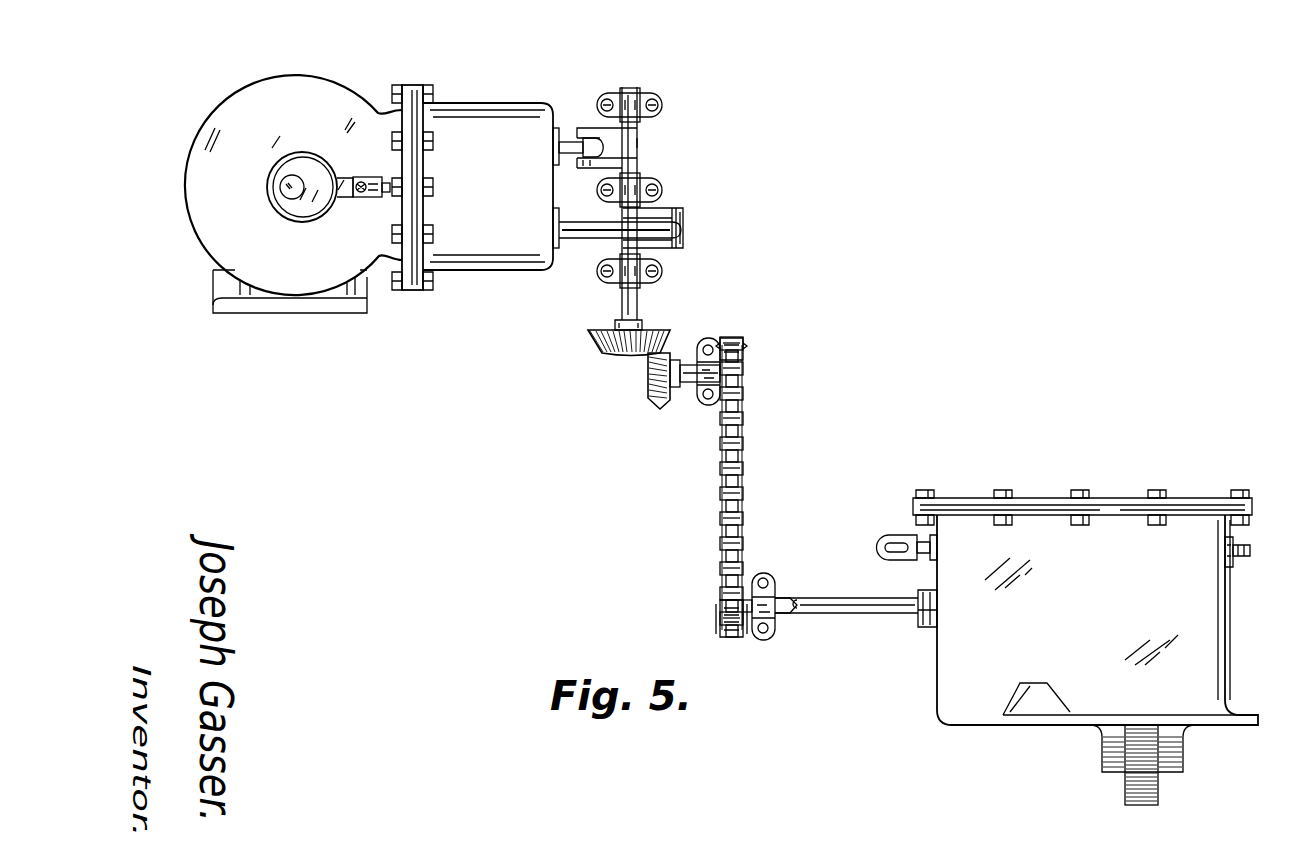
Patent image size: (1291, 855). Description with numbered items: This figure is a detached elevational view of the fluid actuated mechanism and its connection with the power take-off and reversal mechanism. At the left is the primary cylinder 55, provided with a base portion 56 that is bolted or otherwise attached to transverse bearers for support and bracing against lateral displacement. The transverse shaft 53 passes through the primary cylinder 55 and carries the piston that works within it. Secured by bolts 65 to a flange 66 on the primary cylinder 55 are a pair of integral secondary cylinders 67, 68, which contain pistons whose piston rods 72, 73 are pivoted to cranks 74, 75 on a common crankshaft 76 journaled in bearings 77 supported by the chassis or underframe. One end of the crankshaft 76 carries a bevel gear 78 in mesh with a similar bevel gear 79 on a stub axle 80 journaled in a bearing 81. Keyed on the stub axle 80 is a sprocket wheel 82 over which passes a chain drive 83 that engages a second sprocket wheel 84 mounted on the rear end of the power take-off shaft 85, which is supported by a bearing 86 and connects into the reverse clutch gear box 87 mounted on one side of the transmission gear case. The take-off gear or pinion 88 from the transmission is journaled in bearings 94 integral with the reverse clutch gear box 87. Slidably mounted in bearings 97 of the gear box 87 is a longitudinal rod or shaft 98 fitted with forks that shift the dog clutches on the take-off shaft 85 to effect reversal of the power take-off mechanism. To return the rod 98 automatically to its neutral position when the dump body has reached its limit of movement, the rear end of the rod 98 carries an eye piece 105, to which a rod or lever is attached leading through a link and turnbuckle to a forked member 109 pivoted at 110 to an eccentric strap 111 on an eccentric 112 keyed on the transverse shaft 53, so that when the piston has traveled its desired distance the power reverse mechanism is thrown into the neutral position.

The transverse shaft 53 is at (287, 193).
The primary cylinder 55 is at (180, 200).
The base portion 56 is at (348, 310).
The bolts 65 is at (433, 87).
The flange 66 is at (413, 290).
The secondary cylinder 67 is at (505, 120).
The secondary cylinder 68 is at (500, 245).
The piston rod 72 is at (564, 142).
The piston rod 73 is at (582, 240).
The crank 74 is at (583, 126).
The crank 75 is at (686, 242).
The crankshaft 76 is at (640, 305).
The bearings 77 is at (664, 105).
The bevel gear 78 is at (592, 338).
The bevel gear 79 is at (656, 400).
The stub axle 80 is at (689, 365).
The bearing 81 is at (706, 404).
The sprocket wheel 82 is at (732, 340).
The chain drive 83 is at (744, 470).
The second sprocket wheel 84 is at (730, 638).
The power take-off shaft 85 is at (800, 598).
The bearing 86 is at (768, 640).
The reverse clutch gear box 87 is at (937, 660).
The take-off gear or pinion 88 is at (1125, 785).
The bearings 94 is at (1102, 750).
The bearings 97 is at (929, 540).
The longitudinal rod or shaft 98 is at (922, 555).
The eye piece 105 is at (882, 545).
The forked member 109 is at (372, 199).
The pivot 110 is at (362, 182).
The eccentric strap 111 is at (307, 152).
The eccentric 112 is at (303, 208).